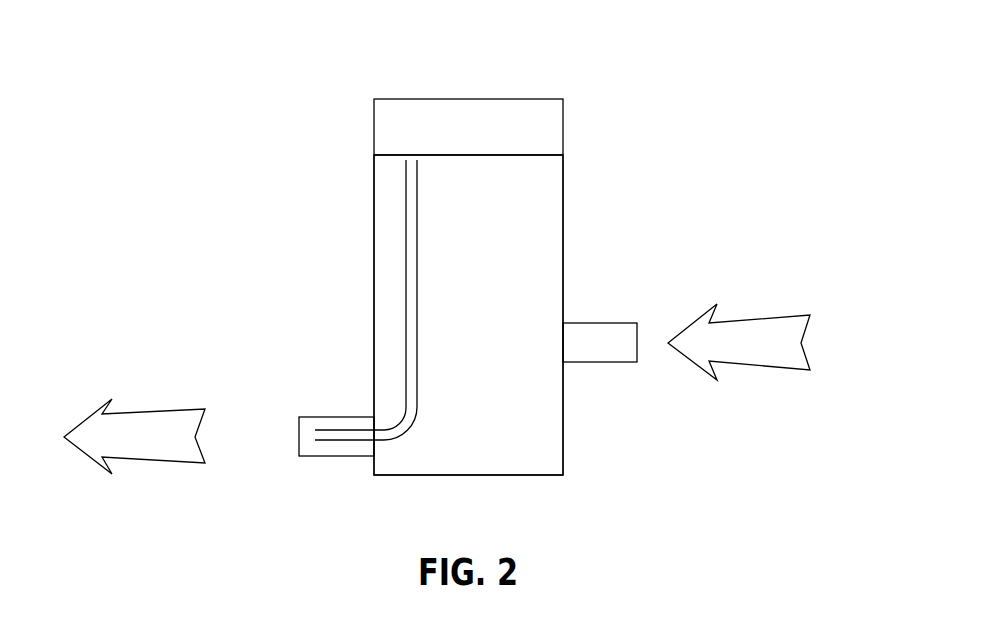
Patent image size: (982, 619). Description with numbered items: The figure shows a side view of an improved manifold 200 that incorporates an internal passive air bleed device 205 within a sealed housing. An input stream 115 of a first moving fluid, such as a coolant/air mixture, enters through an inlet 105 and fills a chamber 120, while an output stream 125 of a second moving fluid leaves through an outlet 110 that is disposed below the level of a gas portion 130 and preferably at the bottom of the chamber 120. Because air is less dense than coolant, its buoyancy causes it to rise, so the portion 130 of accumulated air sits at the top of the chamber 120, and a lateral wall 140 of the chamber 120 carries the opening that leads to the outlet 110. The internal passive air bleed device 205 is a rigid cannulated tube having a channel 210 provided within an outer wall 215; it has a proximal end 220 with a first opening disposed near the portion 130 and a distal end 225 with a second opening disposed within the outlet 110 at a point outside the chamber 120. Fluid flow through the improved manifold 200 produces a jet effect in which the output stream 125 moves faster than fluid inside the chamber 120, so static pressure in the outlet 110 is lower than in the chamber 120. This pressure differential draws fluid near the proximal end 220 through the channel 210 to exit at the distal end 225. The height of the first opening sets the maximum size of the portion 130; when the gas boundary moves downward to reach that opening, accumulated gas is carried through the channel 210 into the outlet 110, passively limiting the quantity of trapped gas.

The improved manifold 200 is at (139, 52).
The inlet 105 is at (581, 356).
The outlet 110 is at (319, 450).
The input stream 115 is at (718, 356).
The chamber 120 is at (449, 308).
The output stream 125 is at (111, 450).
The portion 130 is at (449, 140).
The lateral wall 140 is at (374, 333).
The internal passive air bleed device 205 is at (405, 252).
The channel 210 is at (413, 282).
The outer wall 215 is at (418, 393).
The proximal end 220 is at (425, 169).
The distal end 225 is at (303, 430).